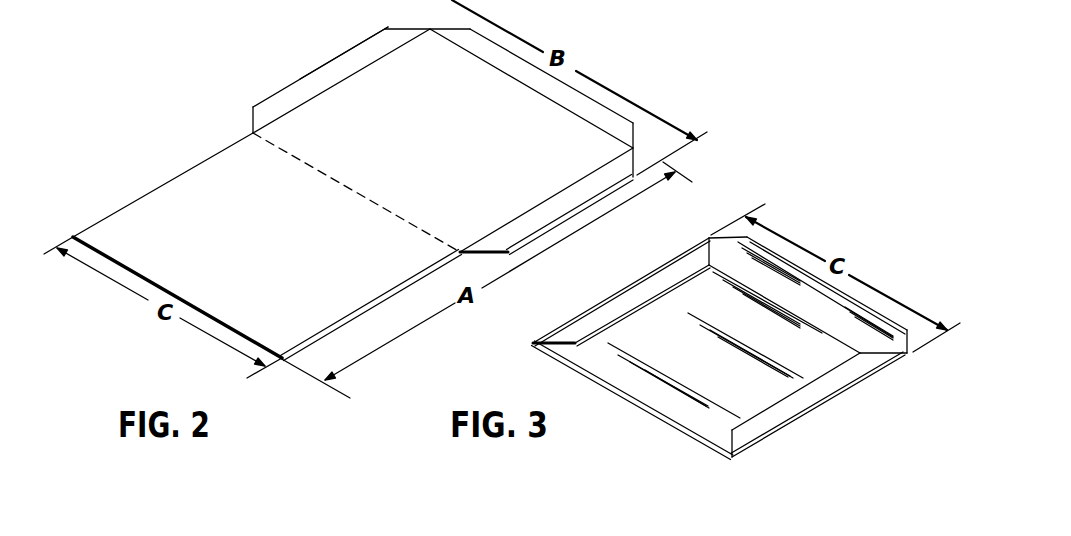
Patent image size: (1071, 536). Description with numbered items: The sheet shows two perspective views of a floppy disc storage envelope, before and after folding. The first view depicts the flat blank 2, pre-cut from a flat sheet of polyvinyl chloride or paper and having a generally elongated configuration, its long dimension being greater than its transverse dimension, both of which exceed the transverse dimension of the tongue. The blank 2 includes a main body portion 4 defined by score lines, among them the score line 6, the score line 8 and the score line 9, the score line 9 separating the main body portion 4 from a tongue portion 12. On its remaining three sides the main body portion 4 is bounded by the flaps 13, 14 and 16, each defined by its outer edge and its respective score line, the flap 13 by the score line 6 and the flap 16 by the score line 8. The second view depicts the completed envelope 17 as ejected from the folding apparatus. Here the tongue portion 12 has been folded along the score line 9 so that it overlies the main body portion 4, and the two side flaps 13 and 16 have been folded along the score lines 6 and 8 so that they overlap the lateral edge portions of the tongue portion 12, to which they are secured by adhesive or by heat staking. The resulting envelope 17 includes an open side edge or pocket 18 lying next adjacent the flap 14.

In FIG. 2, the blank 2 is at (353, 194).
In FIG. 2, the main body portion 4 is at (449, 171).
In FIG. 2, the score line 6 is at (324, 92).
In FIG. 2, the score line 8 is at (548, 199).
In FIG. 2, the score line 9 is at (393, 212).
In FIG. 2, the tongue portion 12 is at (271, 257).
In FIG. 2, the side flap 13 is at (329, 72).
In FIG. 3, the side flap 13 is at (622, 305).
In FIG. 2, the flap 14 is at (514, 67).
In FIG. 3, the flap 14 is at (885, 323).
In FIG. 2, the side flap 16 is at (585, 192).
In FIG. 3, the side flap 16 is at (773, 413).
In FIG. 3, the completed envelope 17 is at (738, 348).
In FIG. 3, the open side edge or pocket 18 is at (835, 293).